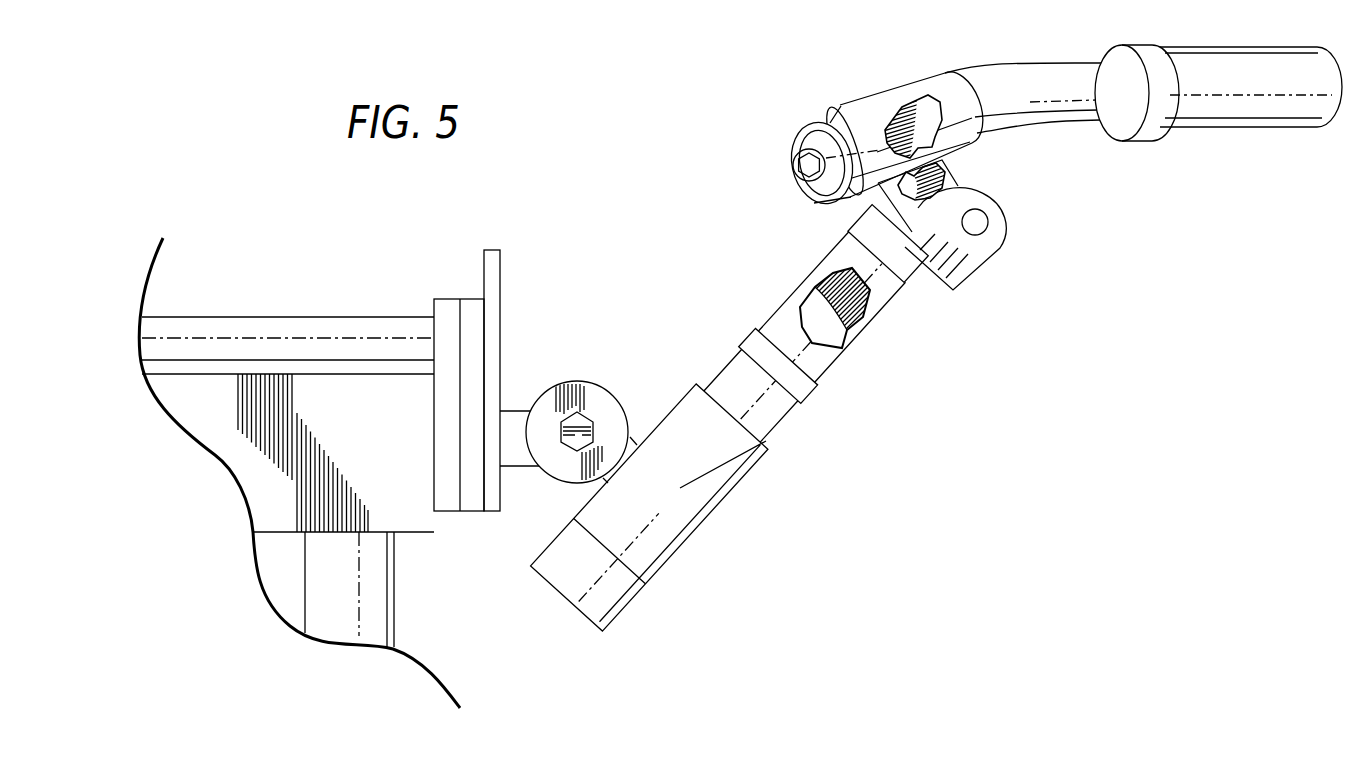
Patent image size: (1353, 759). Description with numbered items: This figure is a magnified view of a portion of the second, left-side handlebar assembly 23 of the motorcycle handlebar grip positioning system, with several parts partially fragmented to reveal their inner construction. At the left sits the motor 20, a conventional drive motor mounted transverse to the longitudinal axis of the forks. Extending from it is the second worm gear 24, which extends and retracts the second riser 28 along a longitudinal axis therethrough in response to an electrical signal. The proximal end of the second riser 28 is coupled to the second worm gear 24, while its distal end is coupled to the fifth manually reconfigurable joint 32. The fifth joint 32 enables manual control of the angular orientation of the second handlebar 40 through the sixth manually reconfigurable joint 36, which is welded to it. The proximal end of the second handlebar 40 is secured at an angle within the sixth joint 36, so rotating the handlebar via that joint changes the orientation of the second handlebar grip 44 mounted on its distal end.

The motor 20 is at (381, 434).
The second handlebar assembly 23 is at (942, 383).
The second worm gear 24 is at (708, 516).
The second riser 28 is at (823, 368).
The fifth manually reconfigurable joint 32 is at (953, 166).
The sixth manually reconfigurable joint 36 is at (896, 89).
The second handlebar 40 is at (1007, 66).
The second handlebar grip 44 is at (1273, 128).